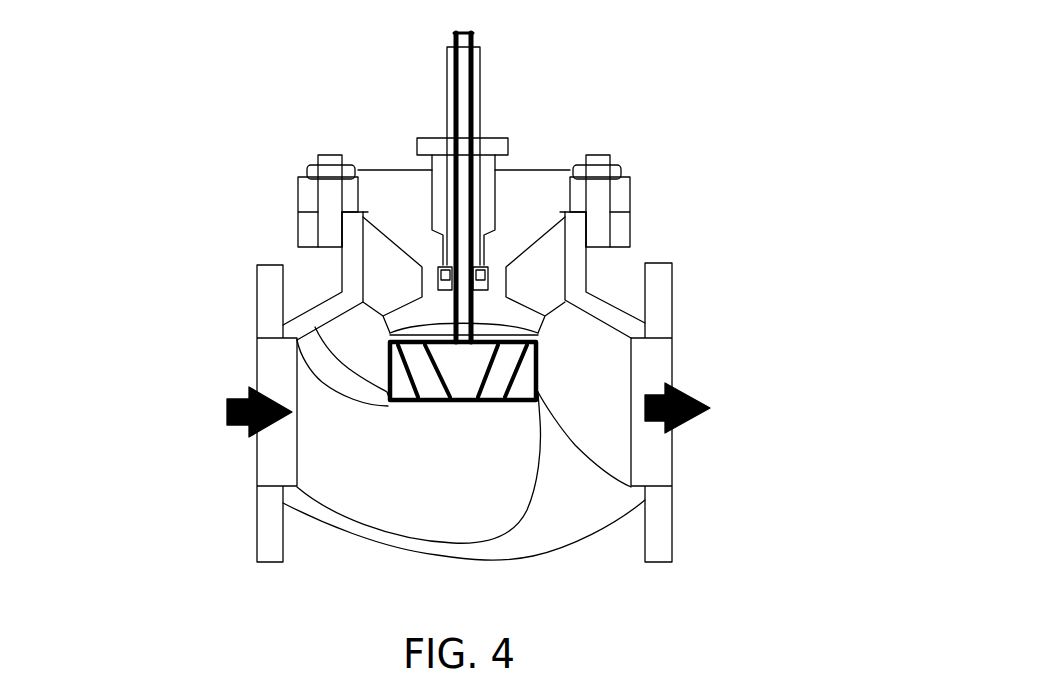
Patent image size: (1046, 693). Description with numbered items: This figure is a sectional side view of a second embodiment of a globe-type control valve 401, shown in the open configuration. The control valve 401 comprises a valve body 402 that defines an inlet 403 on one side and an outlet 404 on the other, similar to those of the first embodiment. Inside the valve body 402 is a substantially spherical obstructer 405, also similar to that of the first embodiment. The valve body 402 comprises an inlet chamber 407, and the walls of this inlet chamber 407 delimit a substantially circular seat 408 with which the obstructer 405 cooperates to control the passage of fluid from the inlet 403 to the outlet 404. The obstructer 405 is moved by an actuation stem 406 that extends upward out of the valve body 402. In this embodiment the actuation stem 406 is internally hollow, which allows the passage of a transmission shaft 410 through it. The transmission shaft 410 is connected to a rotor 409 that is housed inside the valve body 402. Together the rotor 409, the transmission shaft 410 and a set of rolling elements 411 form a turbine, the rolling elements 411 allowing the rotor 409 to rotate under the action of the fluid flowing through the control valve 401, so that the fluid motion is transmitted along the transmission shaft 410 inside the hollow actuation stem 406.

The control valve 401 is at (630, 87).
The valve body 402 is at (296, 268).
The inlet 403 is at (283, 370).
The outlet 404 is at (647, 368).
The obstructer 405 is at (554, 374).
The actuation stem 406 is at (448, 125).
The inlet chamber 407 is at (393, 442).
The seat 408 is at (492, 297).
The rotor 409 is at (502, 368).
The transmission shaft 410 is at (465, 57).
The rolling elements 411 is at (447, 265).